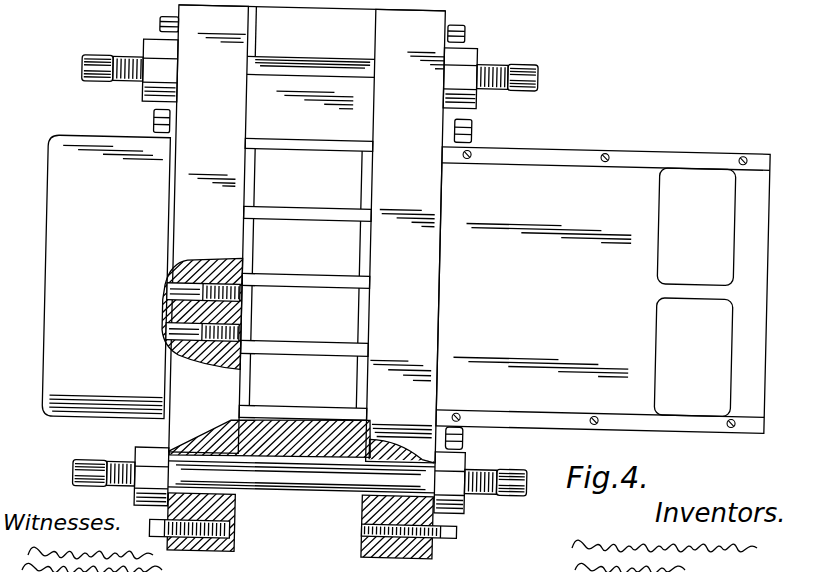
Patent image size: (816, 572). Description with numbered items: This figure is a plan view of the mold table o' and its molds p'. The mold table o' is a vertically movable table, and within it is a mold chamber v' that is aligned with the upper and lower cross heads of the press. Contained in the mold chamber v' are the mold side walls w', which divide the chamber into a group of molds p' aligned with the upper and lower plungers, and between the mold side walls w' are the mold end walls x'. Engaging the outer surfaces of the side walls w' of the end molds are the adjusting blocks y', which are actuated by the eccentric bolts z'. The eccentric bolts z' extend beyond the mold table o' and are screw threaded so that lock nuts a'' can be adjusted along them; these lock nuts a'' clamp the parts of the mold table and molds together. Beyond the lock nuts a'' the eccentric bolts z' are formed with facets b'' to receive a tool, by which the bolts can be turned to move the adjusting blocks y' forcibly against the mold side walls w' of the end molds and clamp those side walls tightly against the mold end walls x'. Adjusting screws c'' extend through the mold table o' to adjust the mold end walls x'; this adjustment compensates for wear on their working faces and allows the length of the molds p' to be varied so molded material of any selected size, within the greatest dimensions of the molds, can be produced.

The lock nuts a'' is at (313, 289).
The facets b'' is at (307, 280).
The eccentric bolts z' is at (330, 280).
The adjusting blocks y' is at (330, 295).
The mold side walls w' is at (391, 265).
The mold chamber v' is at (464, 274).
The adjusting screws c'' is at (195, 356).
The mold end walls x' is at (175, 230).
The mold table o' is at (106, 277).
The molds p' is at (305, 278).